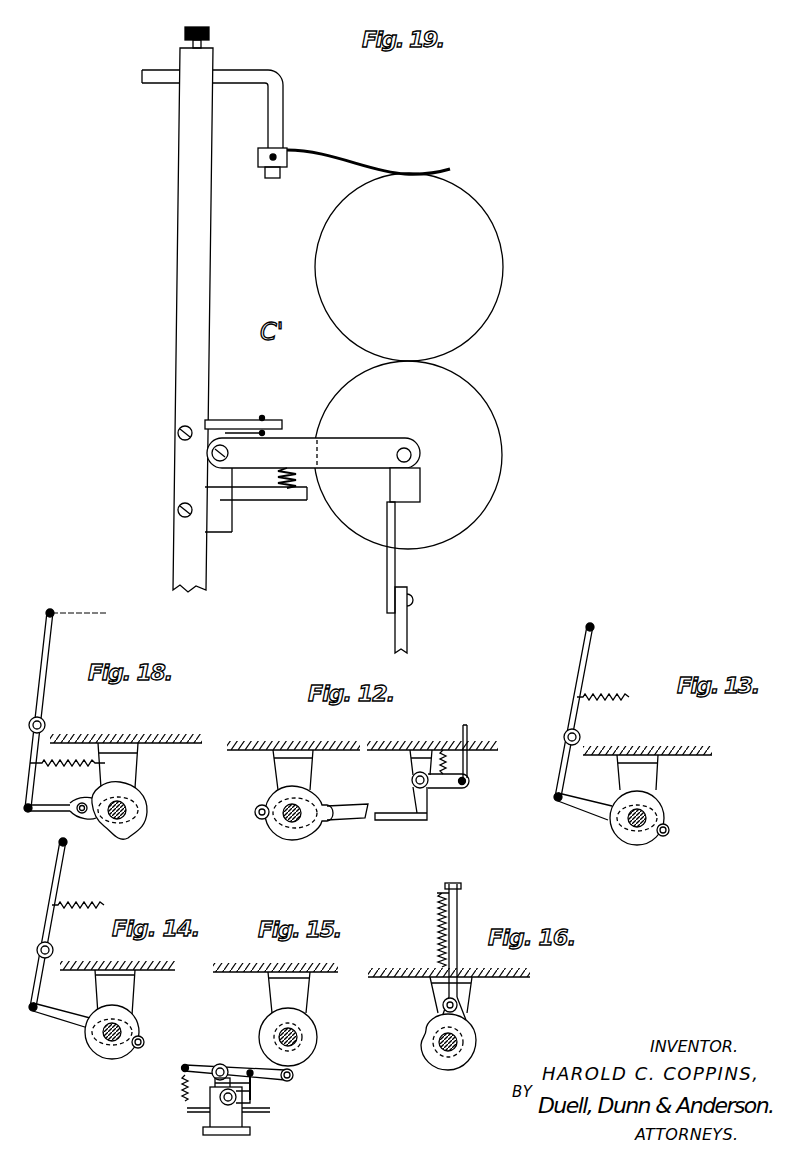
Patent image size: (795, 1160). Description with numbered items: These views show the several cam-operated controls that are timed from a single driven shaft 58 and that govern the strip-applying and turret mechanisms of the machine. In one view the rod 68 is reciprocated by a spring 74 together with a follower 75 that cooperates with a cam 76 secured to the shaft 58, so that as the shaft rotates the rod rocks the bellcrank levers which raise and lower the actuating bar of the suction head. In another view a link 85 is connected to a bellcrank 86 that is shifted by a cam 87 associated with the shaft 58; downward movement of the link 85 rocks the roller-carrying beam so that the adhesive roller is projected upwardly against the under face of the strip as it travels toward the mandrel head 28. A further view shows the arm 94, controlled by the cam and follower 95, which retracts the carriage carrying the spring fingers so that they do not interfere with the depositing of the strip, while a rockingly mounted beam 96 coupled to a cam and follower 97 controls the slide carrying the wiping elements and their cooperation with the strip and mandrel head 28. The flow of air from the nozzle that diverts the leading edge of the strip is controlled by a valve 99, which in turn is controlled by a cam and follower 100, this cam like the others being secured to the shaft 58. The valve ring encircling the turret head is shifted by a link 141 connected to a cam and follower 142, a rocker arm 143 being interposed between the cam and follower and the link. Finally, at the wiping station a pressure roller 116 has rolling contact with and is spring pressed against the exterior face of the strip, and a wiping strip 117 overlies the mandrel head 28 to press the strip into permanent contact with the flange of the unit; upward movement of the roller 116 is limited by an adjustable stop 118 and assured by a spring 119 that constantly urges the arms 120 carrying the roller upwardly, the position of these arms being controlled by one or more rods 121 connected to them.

In FIG. 19, the mandrel head 28 is at (493, 245).
In FIG. 19, the pressure roller 116 is at (490, 440).
In FIG. 19, the wiping strip 117 is at (325, 153).
In FIG. 19, the adjustable stop 118 is at (267, 422).
In FIG. 19, the spring 119 is at (285, 493).
In FIG. 19, the arms 120 is at (290, 445).
In FIG. 19, the rods 121 is at (392, 577).
In FIG. 18, the link 141 is at (78, 613).
In FIG. 18, the rocker arm 143 is at (48, 657).
In FIG. 18, the cam and follower 142 is at (140, 830).
In FIG. 18, the shaft 58 is at (125, 803).
In FIG. 12, the shaft 58 is at (287, 823).
In FIG. 13, the shaft 58 is at (648, 812).
In FIG. 14, the shaft 58 is at (102, 1047).
In FIG. 15, the shaft 58 is at (298, 1032).
In FIG. 16, the shaft 58 is at (445, 1050).
In FIG. 12, the link 85 is at (467, 731).
In FIG. 12, the bellcrank 86 is at (442, 777).
In FIG. 12, the cam 87 is at (310, 800).
In FIG. 13, the arm 94 is at (585, 663).
In FIG. 13, the cam and follower 95 is at (658, 818).
In FIG. 14, the rockingly mounted beam 96 is at (63, 888).
In FIG. 14, the cam and follower 97 is at (138, 1023).
In FIG. 15, the cam and follower 100 is at (305, 1057).
In FIG. 15, the valve 99 is at (235, 1118).
In FIG. 16, the rod 68 is at (458, 887).
In FIG. 16, the spring 74 is at (440, 930).
In FIG. 16, the follower 75 is at (455, 1018).
In FIG. 16, the cam 76 is at (477, 1052).